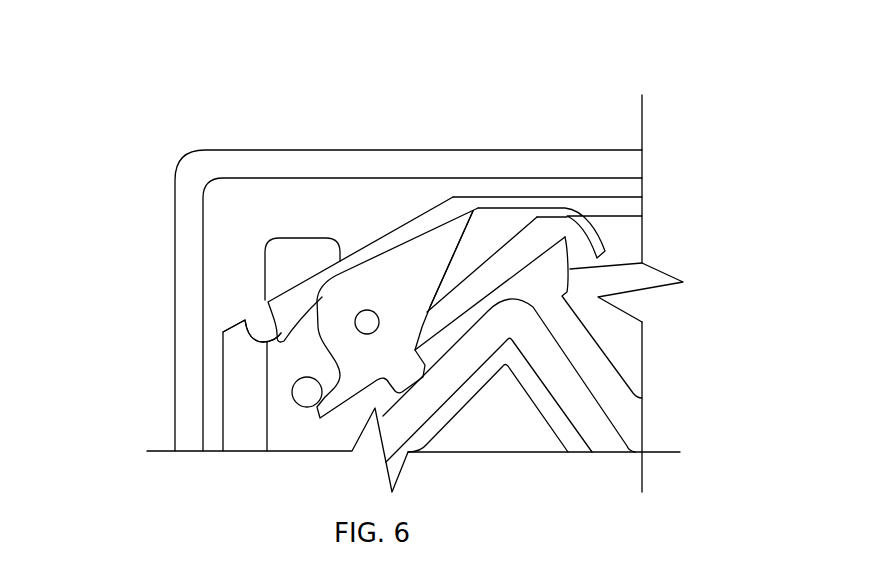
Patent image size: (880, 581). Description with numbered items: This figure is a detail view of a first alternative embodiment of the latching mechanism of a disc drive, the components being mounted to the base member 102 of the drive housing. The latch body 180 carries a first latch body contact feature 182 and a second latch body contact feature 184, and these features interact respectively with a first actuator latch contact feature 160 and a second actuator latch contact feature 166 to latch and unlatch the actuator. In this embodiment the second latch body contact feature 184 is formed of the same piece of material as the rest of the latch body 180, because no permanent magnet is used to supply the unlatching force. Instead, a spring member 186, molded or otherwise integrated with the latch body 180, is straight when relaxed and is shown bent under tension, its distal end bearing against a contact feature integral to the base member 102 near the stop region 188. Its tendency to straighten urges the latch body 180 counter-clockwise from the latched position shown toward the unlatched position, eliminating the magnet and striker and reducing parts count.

The base member 102 is at (183, 157).
The first actuator latch contact feature 160 is at (423, 377).
The second actuator latch contact feature 166 is at (557, 257).
The latch body 180 is at (395, 272).
The first latch body contact feature 182 is at (428, 325).
The second latch body contact feature 184 is at (592, 233).
The spring member 186 is at (292, 313).
The stop 188 is at (263, 327).